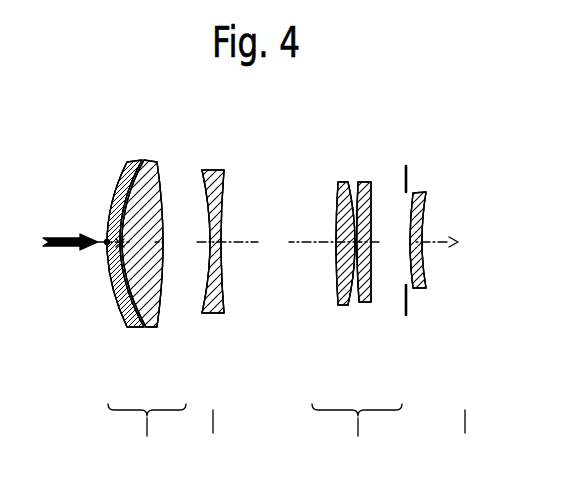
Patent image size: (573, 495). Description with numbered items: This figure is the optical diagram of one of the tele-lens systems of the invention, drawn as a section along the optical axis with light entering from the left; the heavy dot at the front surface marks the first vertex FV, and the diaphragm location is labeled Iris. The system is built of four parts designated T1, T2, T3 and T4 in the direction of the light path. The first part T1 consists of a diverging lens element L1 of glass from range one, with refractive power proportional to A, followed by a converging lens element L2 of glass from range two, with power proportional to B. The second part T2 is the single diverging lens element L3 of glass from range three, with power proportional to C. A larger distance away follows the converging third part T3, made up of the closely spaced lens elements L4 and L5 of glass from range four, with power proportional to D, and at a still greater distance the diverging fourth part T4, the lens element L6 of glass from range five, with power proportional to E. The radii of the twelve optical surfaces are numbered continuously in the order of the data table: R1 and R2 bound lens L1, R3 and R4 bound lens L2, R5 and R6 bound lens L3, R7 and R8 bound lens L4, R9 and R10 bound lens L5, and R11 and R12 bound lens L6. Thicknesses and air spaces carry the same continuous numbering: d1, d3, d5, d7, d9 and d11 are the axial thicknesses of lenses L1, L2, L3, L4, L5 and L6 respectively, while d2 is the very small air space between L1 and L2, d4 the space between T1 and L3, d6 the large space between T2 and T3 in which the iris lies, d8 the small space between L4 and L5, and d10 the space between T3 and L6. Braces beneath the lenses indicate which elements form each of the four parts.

The radius of first optical area R1 is at (119, 178).
The radius of second optical area R2 is at (137, 170).
The radius of third optical area R3 is at (150, 160).
The radius of fourth optical area R4 is at (159, 173).
The radius of fifth optical area R5 is at (203, 172).
The radius of sixth optical area R6 is at (224, 190).
The radius of seventh optical area R7 is at (337, 193).
The radius of eighth optical area R8 is at (352, 183).
The radius of ninth optical area R9 is at (361, 186).
The radius of tenth optical area R10 is at (372, 188).
The radius of eleventh optical area R11 is at (411, 195).
The radius of twelfth optical area R12 is at (428, 210).
The thickness of first lens d1 is at (106, 240).
The first air space d2 is at (112, 248).
The thickness of second lens d3 is at (141, 244).
The second air space d4 is at (186, 245).
The thickness of third lens d5 is at (212, 242).
The third air space d6 is at (278, 246).
The thickness of fourth lens d7 is at (340, 234).
The fourth air space d8 is at (355, 255).
The thickness of fifth lens d9 is at (364, 230).
The fifth air space d10 is at (395, 243).
The thickness of sixth lens d11 is at (427, 230).
The first lens element L1 is at (133, 327).
The second lens element L2 is at (152, 327).
The third lens element L3 is at (213, 313).
The fourth lens element L4 is at (340, 305).
The fifth lens element L5 is at (370, 302).
The sixth lens element L6 is at (427, 288).
The first part T1 is at (146, 317).
The second part T2 is at (215, 322).
The third part T3 is at (357, 328).
The fourth part T4 is at (447, 333).
The first vertex FV is at (98, 250).
The diaphragm location Iris is at (404, 298).